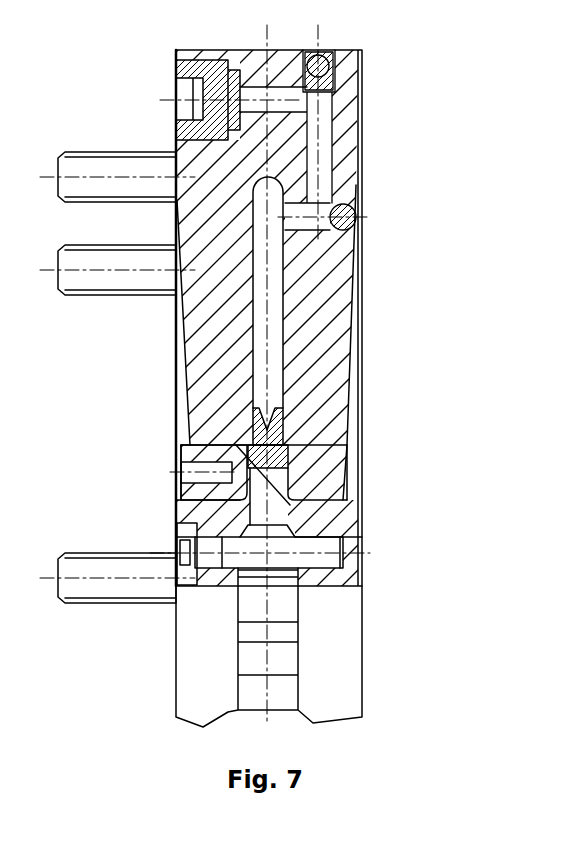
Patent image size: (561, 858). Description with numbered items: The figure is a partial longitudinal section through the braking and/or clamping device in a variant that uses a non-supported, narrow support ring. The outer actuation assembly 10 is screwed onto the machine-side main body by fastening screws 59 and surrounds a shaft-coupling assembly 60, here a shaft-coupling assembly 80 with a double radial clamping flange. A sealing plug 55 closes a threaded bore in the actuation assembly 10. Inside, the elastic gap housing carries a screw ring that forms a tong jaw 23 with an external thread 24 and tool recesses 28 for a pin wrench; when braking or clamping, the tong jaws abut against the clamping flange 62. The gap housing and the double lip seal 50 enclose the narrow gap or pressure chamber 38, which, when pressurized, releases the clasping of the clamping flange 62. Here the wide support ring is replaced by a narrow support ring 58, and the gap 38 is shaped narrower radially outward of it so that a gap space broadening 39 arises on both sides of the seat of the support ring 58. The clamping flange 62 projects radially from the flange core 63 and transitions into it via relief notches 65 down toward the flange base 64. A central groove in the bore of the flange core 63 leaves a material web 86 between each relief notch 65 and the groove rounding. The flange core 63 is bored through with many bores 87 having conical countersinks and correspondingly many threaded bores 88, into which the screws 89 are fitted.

The actuation assembly 10 is at (364, 190).
The sealing plug 55 is at (187, 127).
The fastening screws 59 is at (145, 280).
The pressure chamber; gap; groove, narrow 38 is at (275, 311).
The double lip seal 50 is at (273, 436).
The gap space broadening 39 is at (287, 447).
The external thread 24 is at (188, 445).
The clamping flange 62 is at (267, 483).
The tong jaw, screw ring 23 is at (176, 468).
The flange base 64 is at (200, 503).
The flange core 63 is at (197, 518).
The support ring narrow 58 is at (267, 483).
The tool recess 28 is at (303, 483).
The shaft-coupling assembly 60 is at (343, 498).
The relief notches 65 is at (307, 508).
The material web 86 is at (293, 517).
The threaded bore 88 is at (347, 569).
The screw, cylinder head screw 89 is at (333, 557).
The bore with conical countersink 87 is at (215, 571).
The shaft-coupling assembly with double radial clamping flange 80 is at (176, 627).